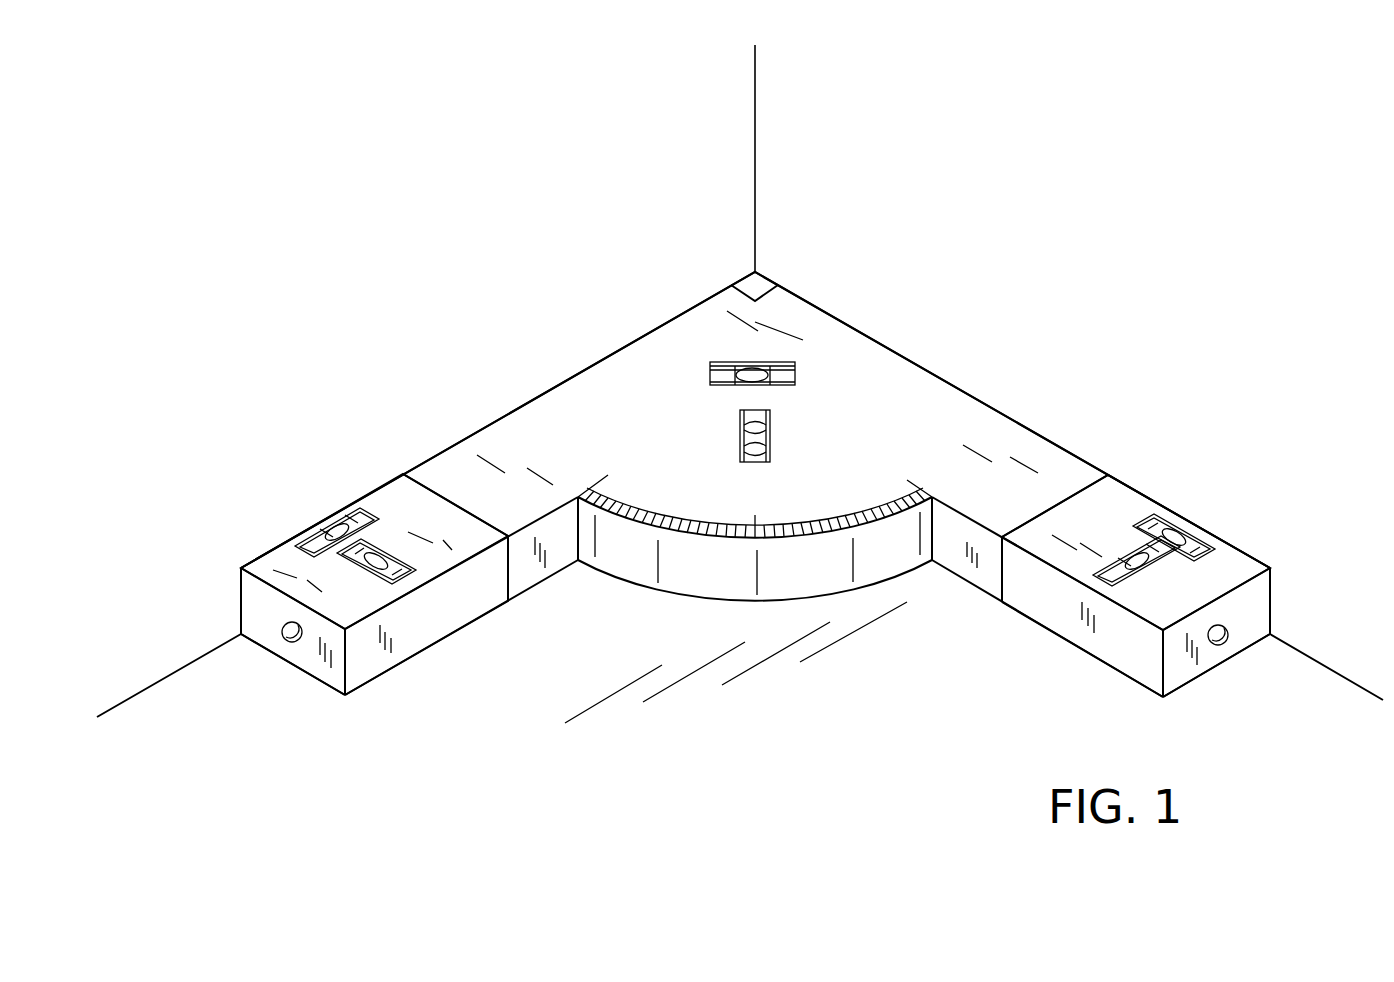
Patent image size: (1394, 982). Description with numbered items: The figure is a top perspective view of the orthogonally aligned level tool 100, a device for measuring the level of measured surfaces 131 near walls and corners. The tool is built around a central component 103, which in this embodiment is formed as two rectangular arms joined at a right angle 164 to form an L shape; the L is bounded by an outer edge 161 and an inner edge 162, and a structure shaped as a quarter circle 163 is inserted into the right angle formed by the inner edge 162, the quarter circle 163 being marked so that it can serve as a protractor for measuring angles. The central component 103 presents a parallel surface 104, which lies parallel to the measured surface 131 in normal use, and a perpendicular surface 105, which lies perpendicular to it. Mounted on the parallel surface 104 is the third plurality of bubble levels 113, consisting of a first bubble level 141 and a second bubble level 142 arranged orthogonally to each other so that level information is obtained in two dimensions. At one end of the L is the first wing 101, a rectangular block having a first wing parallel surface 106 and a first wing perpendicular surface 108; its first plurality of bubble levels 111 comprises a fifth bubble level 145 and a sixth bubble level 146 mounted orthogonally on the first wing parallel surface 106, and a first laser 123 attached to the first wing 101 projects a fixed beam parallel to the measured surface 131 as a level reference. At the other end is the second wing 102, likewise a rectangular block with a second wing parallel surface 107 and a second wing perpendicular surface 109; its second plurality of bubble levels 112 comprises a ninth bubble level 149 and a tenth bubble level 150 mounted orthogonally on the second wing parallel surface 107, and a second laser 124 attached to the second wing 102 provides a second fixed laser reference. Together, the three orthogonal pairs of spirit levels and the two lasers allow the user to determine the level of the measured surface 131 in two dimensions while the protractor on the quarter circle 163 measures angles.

The orthogonally aligned level tool 100 is at (472, 233).
The first wing 101 is at (367, 520).
The second wing 102 is at (1107, 477).
The central component 103 is at (875, 348).
The parallel surface 104 is at (770, 306).
The perpendicular surface 105 is at (533, 572).
The first wing parallel surface 106 is at (275, 570).
The second wing parallel surface 107 is at (1230, 558).
The first wing perpendicular surface 108 is at (417, 638).
The second wing perpendicular surface 109 is at (1095, 638).
The first plurality of bubble levels 111 is at (370, 523).
The second plurality of bubble levels 112 is at (1195, 580).
The third plurality of bubble levels 113 is at (739, 371).
The first laser 123 is at (283, 637).
The second laser 124 is at (1228, 633).
The measured surface 131 is at (795, 715).
The first bubble level 141 is at (707, 368).
The second bubble level 142 is at (757, 462).
The fifth bubble level 145 is at (362, 518).
The sixth bubble level 146 is at (450, 563).
The ninth bubble level 149 is at (1165, 517).
The tenth bubble level 150 is at (1112, 560).
The outer edge 161 is at (488, 423).
The inner edge 162 is at (382, 677).
The quarter circle 163 is at (677, 492).
The right angle 164 is at (748, 288).